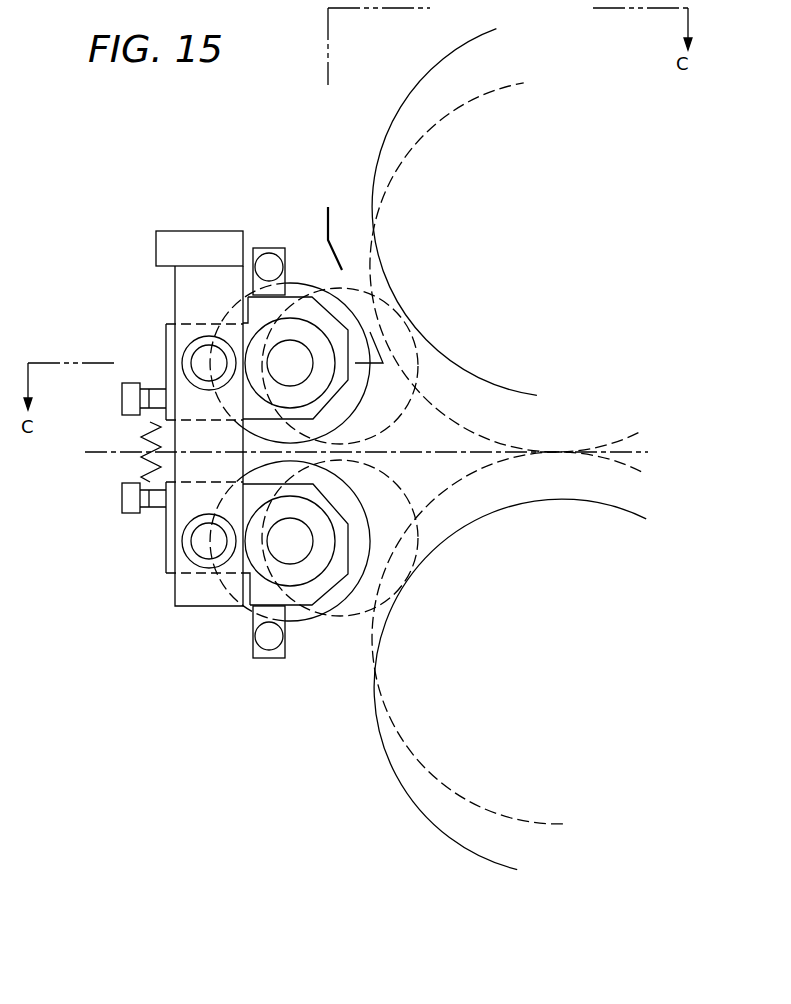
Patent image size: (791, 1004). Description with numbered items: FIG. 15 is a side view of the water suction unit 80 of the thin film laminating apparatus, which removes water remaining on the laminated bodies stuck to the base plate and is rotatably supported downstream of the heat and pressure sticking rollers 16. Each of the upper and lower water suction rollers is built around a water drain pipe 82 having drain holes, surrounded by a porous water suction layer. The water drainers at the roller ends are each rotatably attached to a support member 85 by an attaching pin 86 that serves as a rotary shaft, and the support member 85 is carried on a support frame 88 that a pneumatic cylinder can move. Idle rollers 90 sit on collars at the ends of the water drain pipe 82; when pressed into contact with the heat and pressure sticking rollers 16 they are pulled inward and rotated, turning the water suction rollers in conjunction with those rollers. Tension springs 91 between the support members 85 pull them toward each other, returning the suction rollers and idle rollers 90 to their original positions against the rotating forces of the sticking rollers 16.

The heat and pressure sticking roller 16 is at (450, 72).
The water suction unit 80 is at (158, 528).
The water drain pipe 82 is at (298, 556).
The support member 85 is at (208, 593).
The attaching pin 86 is at (198, 360).
The support frame 88 is at (218, 244).
The idle roller 90 is at (299, 290).
The tension spring 91 is at (150, 460).